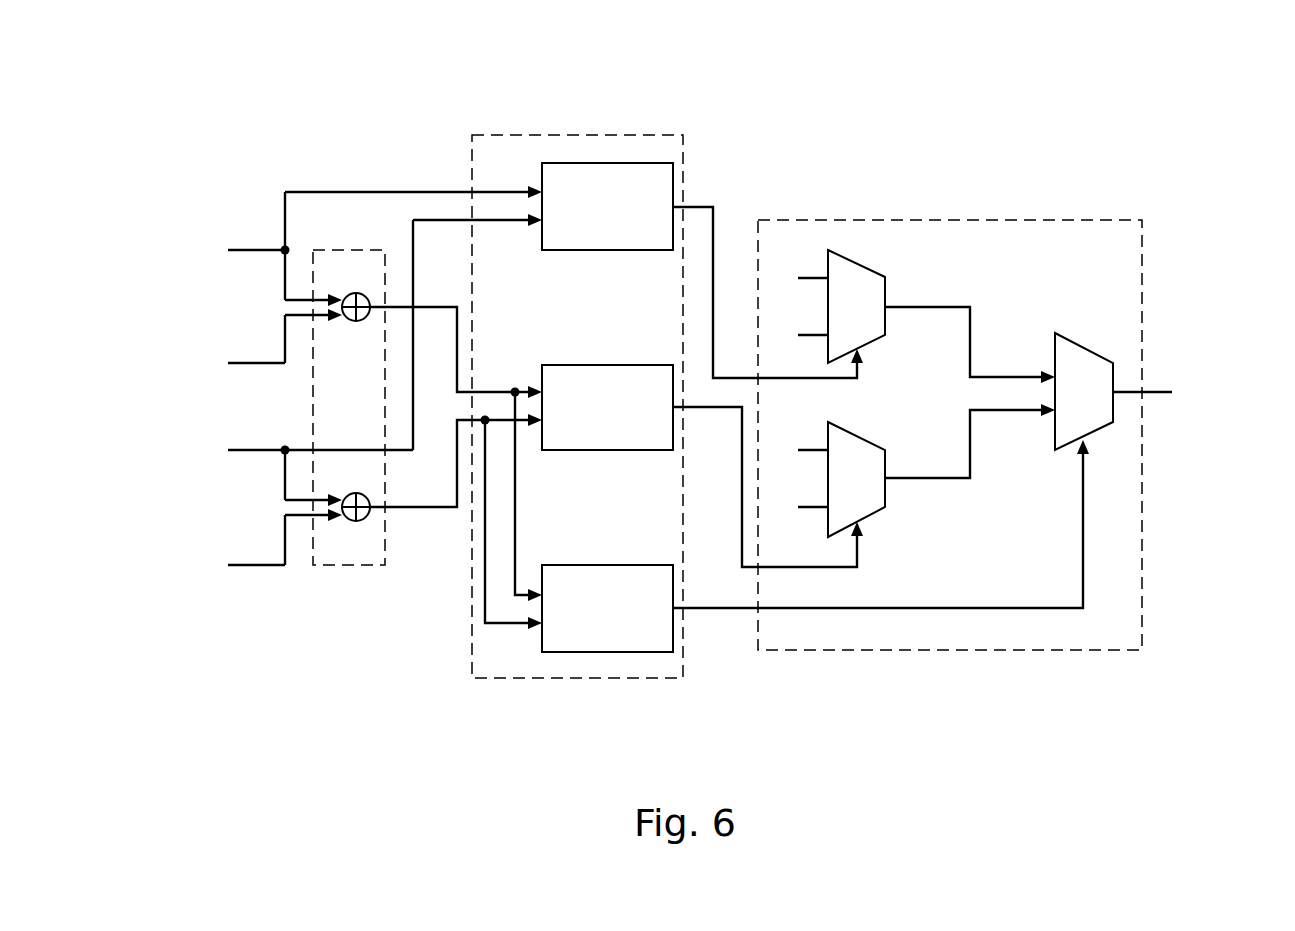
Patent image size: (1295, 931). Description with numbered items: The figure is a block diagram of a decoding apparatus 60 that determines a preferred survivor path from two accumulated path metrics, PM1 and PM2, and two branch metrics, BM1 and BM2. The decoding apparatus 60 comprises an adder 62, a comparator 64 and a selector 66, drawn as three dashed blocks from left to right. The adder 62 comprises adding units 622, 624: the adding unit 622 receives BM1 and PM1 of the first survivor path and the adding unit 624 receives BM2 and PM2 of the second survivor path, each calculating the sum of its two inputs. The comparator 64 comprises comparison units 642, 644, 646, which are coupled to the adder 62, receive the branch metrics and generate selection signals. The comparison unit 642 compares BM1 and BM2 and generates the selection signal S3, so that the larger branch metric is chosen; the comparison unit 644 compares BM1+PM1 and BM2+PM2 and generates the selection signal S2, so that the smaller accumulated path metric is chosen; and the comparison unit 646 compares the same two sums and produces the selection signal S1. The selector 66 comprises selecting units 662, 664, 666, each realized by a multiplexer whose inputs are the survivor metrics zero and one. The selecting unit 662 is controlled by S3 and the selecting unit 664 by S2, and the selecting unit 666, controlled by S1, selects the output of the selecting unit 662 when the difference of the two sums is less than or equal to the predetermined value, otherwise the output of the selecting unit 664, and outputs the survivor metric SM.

The decoding apparatus 60 is at (1268, 86).
The adder 62 is at (323, 567).
The adding unit 622 is at (355, 292).
The adding unit 624 is at (360, 521).
The comparator 64 is at (512, 135).
The comparison unit 642 is at (632, 163).
The comparison unit 644 is at (560, 450).
The comparison unit 646 is at (557, 652).
The selector 66 is at (998, 220).
The selecting unit 662 is at (858, 262).
The selecting unit 664 is at (858, 432).
The selecting unit 666 is at (1082, 347).